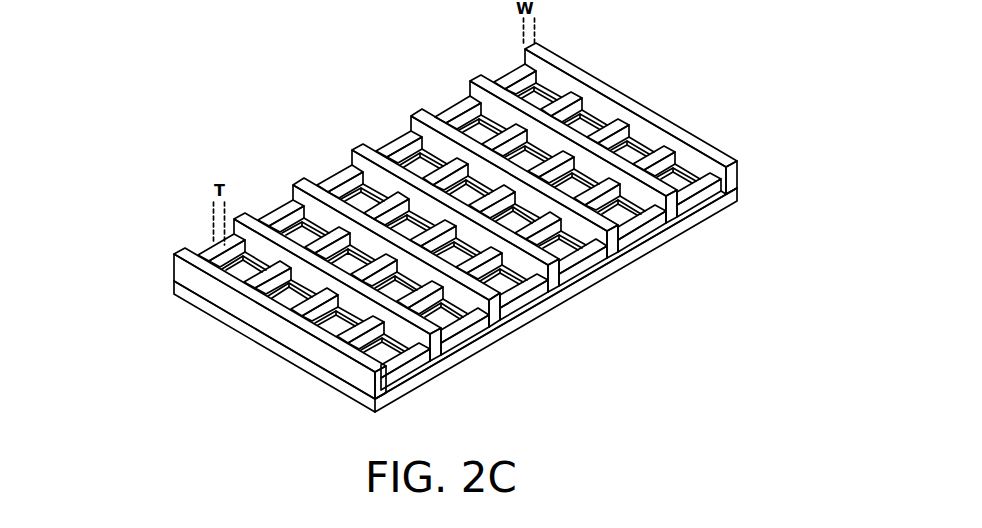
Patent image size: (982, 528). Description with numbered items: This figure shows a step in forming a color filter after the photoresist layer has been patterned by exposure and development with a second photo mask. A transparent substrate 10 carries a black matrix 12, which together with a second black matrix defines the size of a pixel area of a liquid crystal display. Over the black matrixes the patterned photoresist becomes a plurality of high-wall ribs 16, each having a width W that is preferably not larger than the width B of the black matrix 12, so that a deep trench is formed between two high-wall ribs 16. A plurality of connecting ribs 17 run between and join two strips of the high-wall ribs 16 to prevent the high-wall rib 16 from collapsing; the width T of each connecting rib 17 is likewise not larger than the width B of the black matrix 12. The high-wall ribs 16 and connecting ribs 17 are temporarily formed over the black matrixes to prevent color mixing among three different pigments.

The transparent substrate 10 is at (707, 212).
The black matrix 12 is at (690, 168).
The high-wall rib 16 is at (476, 80).
The connecting rib 17 is at (395, 140).